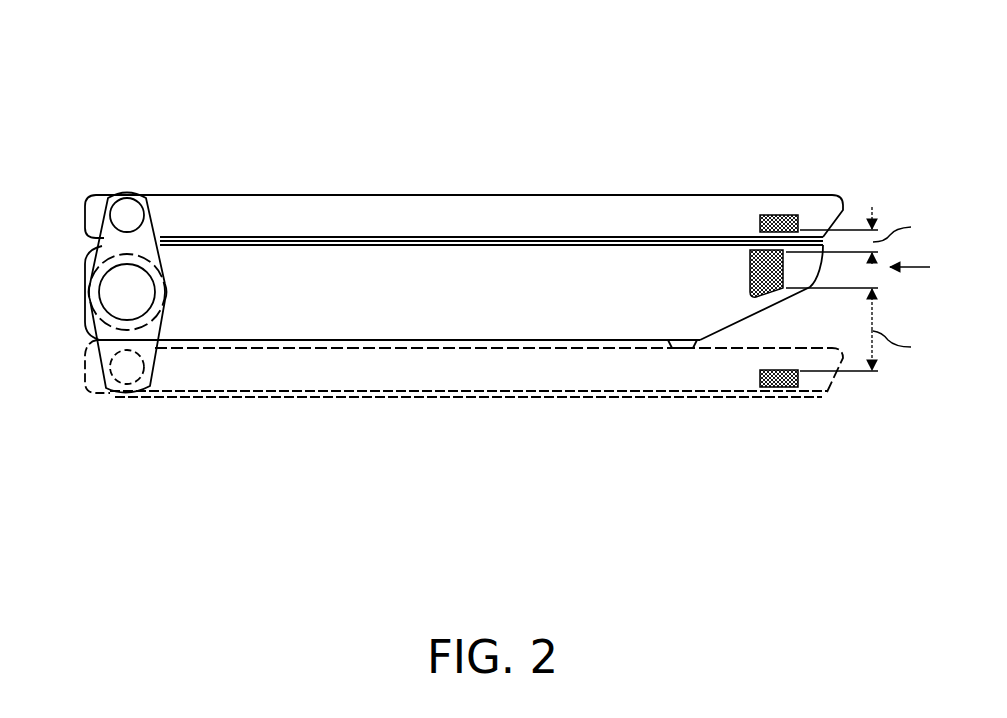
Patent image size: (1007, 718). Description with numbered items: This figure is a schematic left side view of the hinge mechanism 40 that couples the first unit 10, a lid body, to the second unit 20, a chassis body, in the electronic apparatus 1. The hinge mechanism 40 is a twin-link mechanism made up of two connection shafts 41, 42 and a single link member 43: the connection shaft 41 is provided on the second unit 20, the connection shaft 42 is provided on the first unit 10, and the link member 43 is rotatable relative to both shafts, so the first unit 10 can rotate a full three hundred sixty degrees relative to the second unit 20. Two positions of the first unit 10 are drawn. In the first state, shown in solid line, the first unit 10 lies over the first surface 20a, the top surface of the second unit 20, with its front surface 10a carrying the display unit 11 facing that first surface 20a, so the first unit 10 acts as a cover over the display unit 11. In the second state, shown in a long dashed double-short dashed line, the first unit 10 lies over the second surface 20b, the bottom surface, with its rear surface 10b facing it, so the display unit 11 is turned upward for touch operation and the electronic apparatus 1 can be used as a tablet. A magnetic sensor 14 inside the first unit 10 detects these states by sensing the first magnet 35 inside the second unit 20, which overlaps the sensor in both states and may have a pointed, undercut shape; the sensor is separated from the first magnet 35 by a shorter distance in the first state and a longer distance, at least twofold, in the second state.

The electronic apparatus 1 is at (150, 114).
The first unit 10 is at (418, 208).
The front surface 10a is at (535, 245).
The rear surface 10b is at (525, 195).
The display unit 11 is at (430, 245).
The magnetic sensor 14 is at (778, 215).
The second unit 20 is at (574, 303).
The first surface 20a is at (613, 240).
The second surface 20b is at (613, 343).
The first magnet 35 is at (749, 272).
The hinge mechanism 40 is at (78, 295).
The connection shaft 41 is at (98, 288).
The connection shaft 42 is at (110, 216).
The link member 43 is at (97, 240).